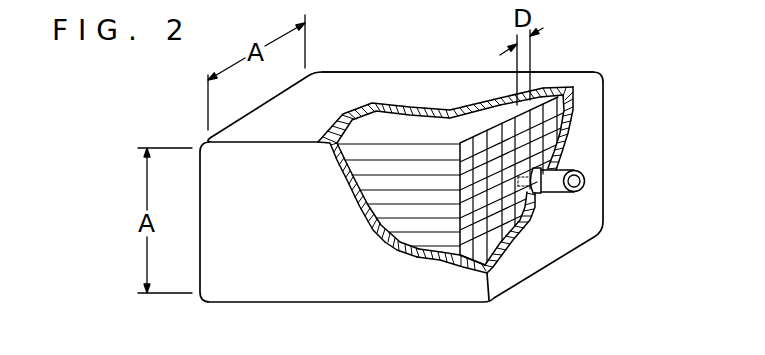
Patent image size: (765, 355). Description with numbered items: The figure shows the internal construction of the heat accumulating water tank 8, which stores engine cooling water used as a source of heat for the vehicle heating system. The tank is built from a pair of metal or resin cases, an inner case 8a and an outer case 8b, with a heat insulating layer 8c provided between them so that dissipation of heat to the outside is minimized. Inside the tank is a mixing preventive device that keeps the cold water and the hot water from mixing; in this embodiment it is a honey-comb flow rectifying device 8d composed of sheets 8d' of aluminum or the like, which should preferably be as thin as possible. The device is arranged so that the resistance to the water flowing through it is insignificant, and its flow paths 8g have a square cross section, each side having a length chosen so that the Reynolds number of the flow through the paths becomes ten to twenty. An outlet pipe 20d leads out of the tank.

The heat accumulating water tank 8 is at (576, 62).
The inner case 8a is at (394, 111).
The outer case 8b is at (358, 72).
The heat insulating layer 8c is at (360, 209).
The honey-comb flow rectifying device 8d is at (412, 218).
The sheets 8d' is at (394, 257).
The flow paths 8g is at (516, 208).
The outlet pipe 20d is at (562, 172).